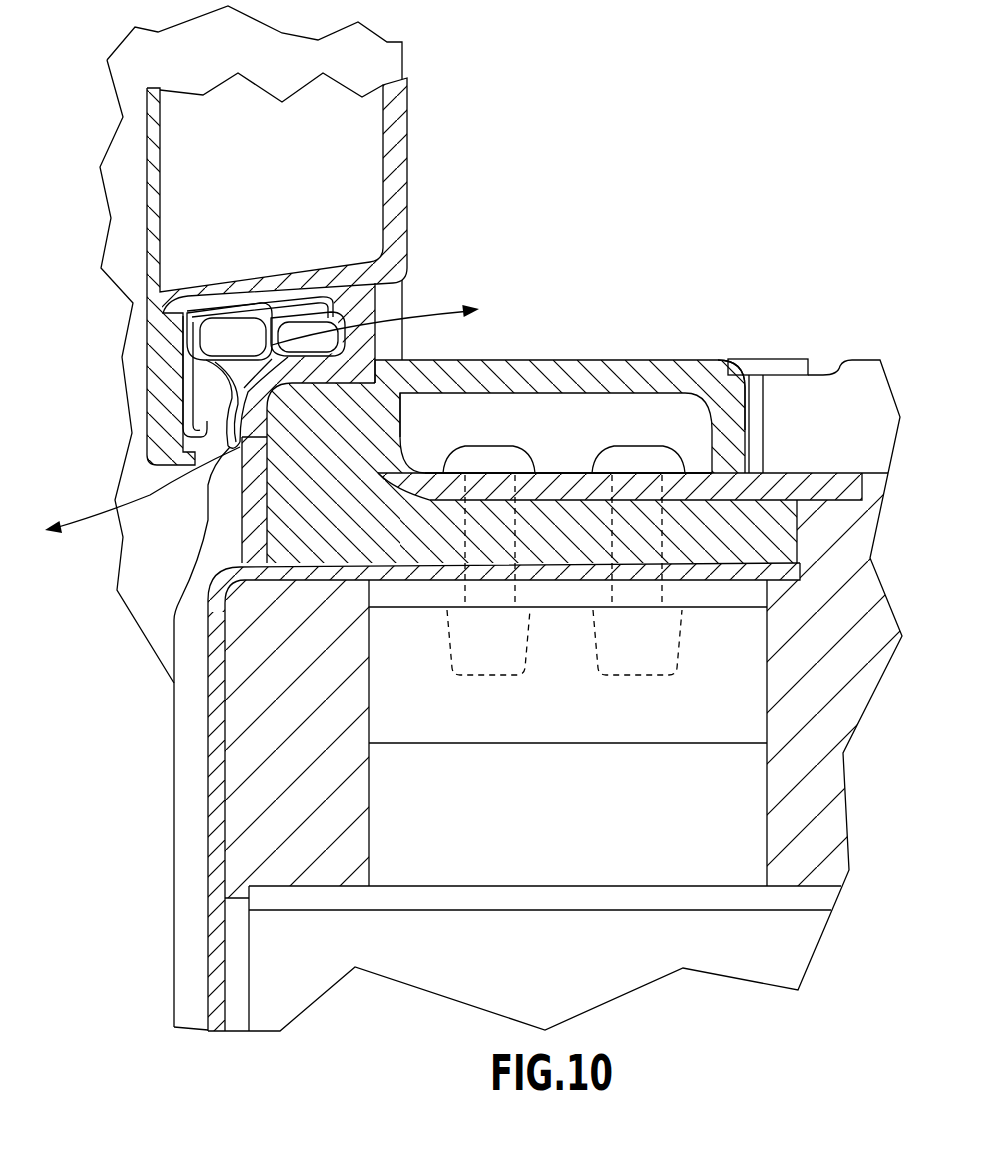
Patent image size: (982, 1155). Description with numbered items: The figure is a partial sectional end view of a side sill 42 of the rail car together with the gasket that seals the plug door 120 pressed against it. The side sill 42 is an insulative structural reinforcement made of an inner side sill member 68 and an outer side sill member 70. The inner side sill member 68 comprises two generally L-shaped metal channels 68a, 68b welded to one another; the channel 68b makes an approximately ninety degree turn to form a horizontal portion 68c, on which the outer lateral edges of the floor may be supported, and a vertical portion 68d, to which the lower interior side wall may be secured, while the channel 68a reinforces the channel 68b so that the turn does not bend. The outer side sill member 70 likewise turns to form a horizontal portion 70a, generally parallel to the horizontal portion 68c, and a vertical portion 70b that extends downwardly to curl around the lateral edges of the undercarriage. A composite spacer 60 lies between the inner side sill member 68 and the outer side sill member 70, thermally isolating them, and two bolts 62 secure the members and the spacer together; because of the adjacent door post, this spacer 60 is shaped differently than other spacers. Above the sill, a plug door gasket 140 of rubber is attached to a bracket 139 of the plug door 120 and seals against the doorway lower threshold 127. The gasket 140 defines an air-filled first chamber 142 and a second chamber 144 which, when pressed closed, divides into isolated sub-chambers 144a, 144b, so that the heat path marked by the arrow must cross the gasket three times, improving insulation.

The side sill 42 is at (632, 348).
The composite spacer 60 is at (730, 540).
The bolts 62 is at (510, 445).
The inner side sill member 68 is at (573, 360).
The channel 68a is at (715, 360).
The channel 68b is at (400, 427).
The horizontal portion 68c is at (567, 473).
The vertical portion 68d is at (367, 413).
The outer side sill member 70 is at (208, 780).
The horizontal portion 70a is at (565, 580).
The vertical portion 70b is at (225, 945).
The plug door 120 is at (298, 175).
The doorway lower threshold 127 is at (240, 500).
The bracket 139 is at (213, 338).
The plug door gasket 140 is at (220, 437).
The first chamber 142 is at (235, 330).
The second chamber 144 is at (432, 312).
The sub-chamber 144a is at (300, 325).
The sub-chamber 144b is at (213, 392).